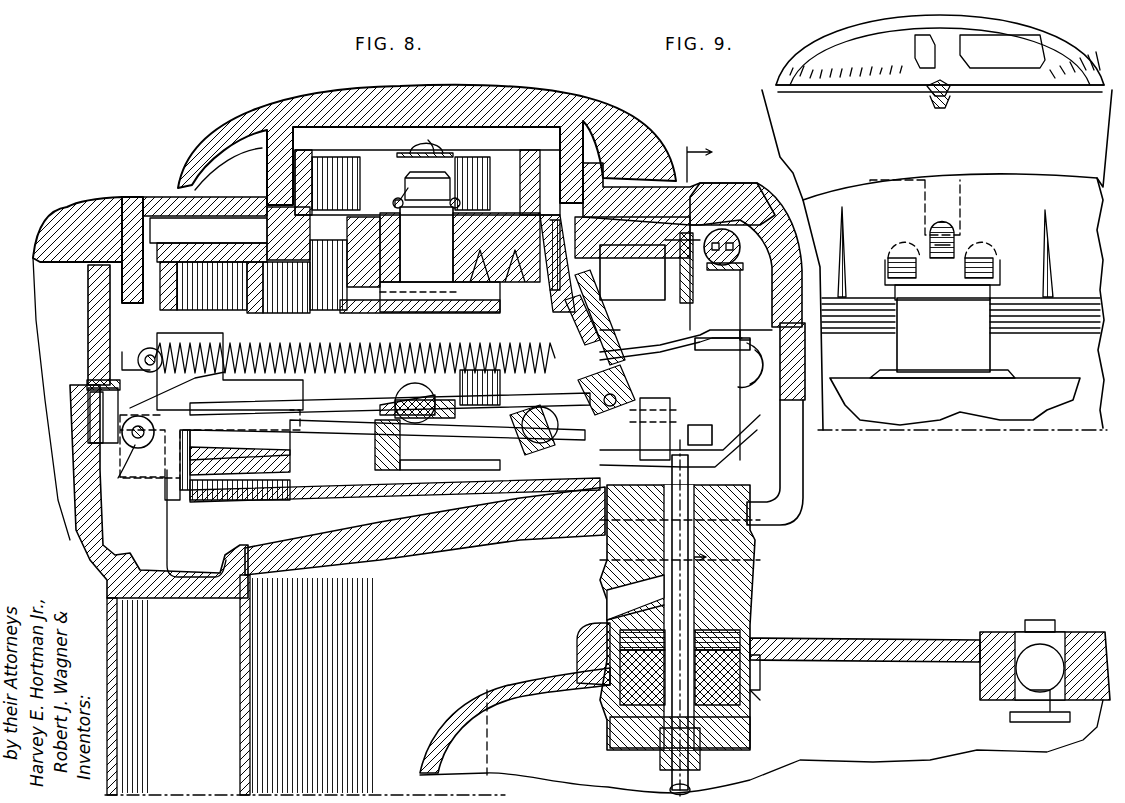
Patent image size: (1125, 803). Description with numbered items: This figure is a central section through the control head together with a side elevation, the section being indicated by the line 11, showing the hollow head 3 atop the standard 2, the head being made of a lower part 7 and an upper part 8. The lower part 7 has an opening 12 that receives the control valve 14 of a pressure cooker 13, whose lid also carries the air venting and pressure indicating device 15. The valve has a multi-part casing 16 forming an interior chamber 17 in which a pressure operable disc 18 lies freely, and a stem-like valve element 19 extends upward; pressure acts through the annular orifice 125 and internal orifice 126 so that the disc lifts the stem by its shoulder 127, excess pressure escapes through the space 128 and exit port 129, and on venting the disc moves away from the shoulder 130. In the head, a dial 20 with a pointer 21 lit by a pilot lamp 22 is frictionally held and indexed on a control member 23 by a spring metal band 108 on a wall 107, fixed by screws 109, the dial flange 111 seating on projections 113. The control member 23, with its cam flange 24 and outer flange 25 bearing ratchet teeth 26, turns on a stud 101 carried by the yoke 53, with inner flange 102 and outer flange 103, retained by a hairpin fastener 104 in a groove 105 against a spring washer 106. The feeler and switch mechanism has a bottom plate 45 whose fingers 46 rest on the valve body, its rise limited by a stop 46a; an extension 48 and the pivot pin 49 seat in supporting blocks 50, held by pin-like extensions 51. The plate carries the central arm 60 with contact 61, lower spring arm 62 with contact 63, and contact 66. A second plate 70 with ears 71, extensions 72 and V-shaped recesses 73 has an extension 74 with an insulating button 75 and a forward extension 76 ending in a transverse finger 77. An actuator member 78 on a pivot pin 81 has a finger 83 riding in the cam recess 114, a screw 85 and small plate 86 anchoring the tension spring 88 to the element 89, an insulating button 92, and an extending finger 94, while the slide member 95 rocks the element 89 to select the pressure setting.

In FIG. 8, the standard 2 is at (240, 682).
In FIG. 8, the hollow head 3 is at (70, 387).
In FIG. 9, the hollow head 3 is at (760, 100).
In FIG. 8, the lower part of head 7 is at (72, 432).
In FIG. 9, the lower part of head 7 is at (1077, 206).
In FIG. 8, the upper part of head 8 is at (135, 195).
In FIG. 9, the upper part of head 8 is at (1012, 136).
In FIG. 8, the section line 11 is at (689, 357).
In FIG. 8, the opening 12 is at (785, 500).
In FIG. 9, the opening 12 is at (990, 292).
In FIG. 8, the pressure cooker 13 is at (845, 640).
In FIG. 9, the pressure cooker 13 is at (950, 403).
In FIG. 8, the control valve 14 is at (755, 568).
In FIG. 9, the control valve 14 is at (950, 341).
In FIG. 8, the air venting and pressure indicating device 15 is at (985, 630).
In FIG. 8, the valve casing 16 is at (148, 216).
In FIG. 8, the interior chamber 17 is at (755, 668).
In FIG. 8, the pressure operable disc 18 is at (755, 692).
In FIG. 8, the valve element 19 is at (690, 538).
In FIG. 9, the valve element 19 is at (955, 245).
In FIG. 8, the dial 20 is at (512, 88).
In FIG. 9, the dial 20 is at (1040, 25).
In FIG. 8, the pointer 21 is at (732, 230).
In FIG. 9, the pointer 21 is at (925, 96).
In FIG. 8, the pilot lamp 22 is at (760, 230).
In FIG. 8, the control member 23 is at (368, 146).
In FIG. 8, the cam flange 24 is at (270, 318).
In FIG. 8, the outer flange 25 is at (170, 310).
In FIG. 8, the ratchet teeth 26 is at (697, 283).
In FIG. 8, the bottom plate 45 is at (310, 490).
In FIG. 8, the fingers 46 is at (730, 473).
In FIG. 9, the fingers 46 is at (888, 270).
In FIG. 8, the stop 46a is at (695, 423).
In FIG. 8, the extension 48 is at (175, 500).
In FIG. 8, the pivot pin 49 is at (118, 438).
In FIG. 8, the supporting blocks 50 is at (165, 540).
In FIG. 8, the pin-like extensions 51 is at (125, 398).
In FIG. 8, the yoke 53 is at (355, 297).
In FIG. 8, the central arm 60 is at (330, 405).
In FIG. 8, the contact 61 is at (380, 418).
In FIG. 8, the lower spring arm 62 is at (285, 462).
In FIG. 8, the contact 63 is at (440, 430).
In FIG. 8, the contact 66 is at (370, 395).
In FIG. 8, the second plate 70 is at (250, 427).
In FIG. 8, the ears 71 is at (118, 460).
In FIG. 8, the extensions 72 is at (222, 388).
In FIG. 8, the V-shaped recesses 73 is at (165, 395).
In FIG. 8, the extension 74 is at (495, 408).
In FIG. 8, the insulating button 75 is at (500, 385).
In FIG. 8, the forward extension 76 is at (655, 440).
In FIG. 9, the forward extension 76 is at (928, 238).
In FIG. 8, the transverse finger 77 is at (725, 338).
In FIG. 8, the actuator member 78 is at (672, 341).
In FIG. 8, the pivot pin 81 is at (630, 398).
In FIG. 8, the finger 83 is at (630, 265).
In FIG. 8, the screw 85 is at (630, 320).
In FIG. 8, the small plate 86 is at (580, 330).
In FIG. 8, the tension spring 88 is at (335, 340).
In FIG. 8, the element 89 is at (122, 358).
In FIG. 8, the insulating button 92 is at (560, 392).
In FIG. 8, the extending finger 94 is at (726, 371).
In FIG. 8, the slide member 95 is at (34, 232).
In FIG. 8, the stud 101 is at (440, 243).
In FIG. 8, the inner flange 102 is at (455, 300).
In FIG. 8, the outer flange 103 is at (520, 292).
In FIG. 8, the hairpin fastener 104 is at (382, 208).
In FIG. 8, the groove 105 is at (442, 180).
In FIG. 8, the spring washer 106 is at (462, 205).
In FIG. 8, the wall 107 is at (300, 170).
In FIG. 8, the spring metal band 108 is at (445, 153).
In FIG. 8, the screws 109 is at (420, 140).
In FIG. 8, the circular flange 111 is at (238, 160).
In FIG. 8, the seating projections 113 is at (262, 230).
In FIG. 8, the V-shaped recess 114 is at (582, 236).
In FIG. 8, the annular orifice 125 is at (578, 710).
In FIG. 8, the internal orifice 126 is at (725, 748).
In FIG. 8, the shoulder 127 is at (590, 648).
In FIG. 8, the space 128 is at (610, 622).
In FIG. 8, the exit port 129 is at (625, 598).
In FIG. 8, the shoulder 130 is at (745, 618).